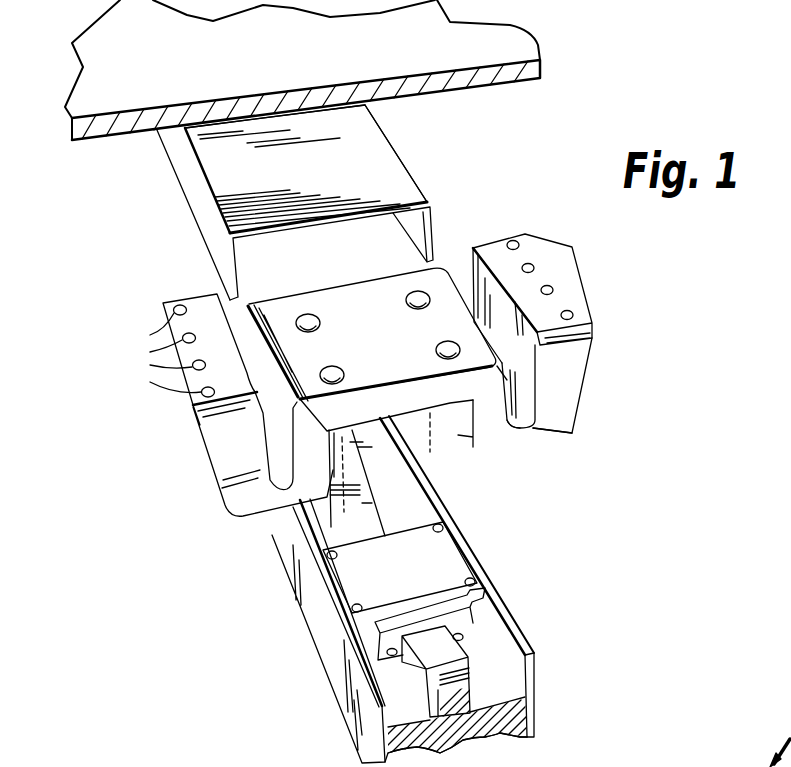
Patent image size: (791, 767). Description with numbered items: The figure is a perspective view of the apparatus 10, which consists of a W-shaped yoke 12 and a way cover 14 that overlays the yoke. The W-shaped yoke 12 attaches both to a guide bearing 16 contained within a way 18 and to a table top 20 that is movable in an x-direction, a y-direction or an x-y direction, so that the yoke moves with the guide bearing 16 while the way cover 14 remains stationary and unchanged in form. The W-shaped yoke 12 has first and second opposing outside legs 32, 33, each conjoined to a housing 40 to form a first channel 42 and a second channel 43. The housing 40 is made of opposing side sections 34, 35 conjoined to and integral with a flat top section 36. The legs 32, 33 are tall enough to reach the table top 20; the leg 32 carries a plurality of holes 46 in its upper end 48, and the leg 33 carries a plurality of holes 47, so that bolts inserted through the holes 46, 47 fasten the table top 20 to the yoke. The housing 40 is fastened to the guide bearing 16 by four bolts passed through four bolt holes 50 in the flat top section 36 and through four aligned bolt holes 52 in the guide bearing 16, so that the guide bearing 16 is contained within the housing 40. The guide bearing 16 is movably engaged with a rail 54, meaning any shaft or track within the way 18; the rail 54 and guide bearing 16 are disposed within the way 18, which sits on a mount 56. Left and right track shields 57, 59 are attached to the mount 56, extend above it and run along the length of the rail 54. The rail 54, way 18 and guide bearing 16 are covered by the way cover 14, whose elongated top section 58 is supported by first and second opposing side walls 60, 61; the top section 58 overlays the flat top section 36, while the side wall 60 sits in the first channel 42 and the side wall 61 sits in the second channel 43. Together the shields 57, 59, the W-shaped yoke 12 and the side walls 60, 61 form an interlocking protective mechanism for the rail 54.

The apparatus 10 is at (530, 232).
The W-shaped yoke 12 is at (553, 437).
The way cover 14 is at (387, 163).
The guide bearing 16 is at (448, 562).
The way 18 is at (480, 667).
The table top 20 is at (93, 100).
The first outside leg 32 is at (223, 427).
The second outside leg 33 is at (565, 395).
The side section 34 is at (310, 443).
The side section 35 is at (462, 372).
The flat top section 36 is at (348, 290).
The housing 40 is at (413, 417).
The first channel 42 is at (273, 477).
The second channel 43 is at (528, 425).
The holes 46 is at (154, 353).
The holes 47 is at (568, 313).
The upper end 48 is at (201, 312).
The bolt holes 50 is at (340, 372).
The bolt holes 52 is at (362, 605).
The rail 54 is at (450, 660).
The mount 56 is at (492, 688).
The left track shield 57 is at (380, 684).
The elongated top section 58 is at (365, 132).
The right track shield 59 is at (528, 666).
The first way cover side wall 60 is at (200, 195).
The second way cover side wall 61 is at (433, 227).